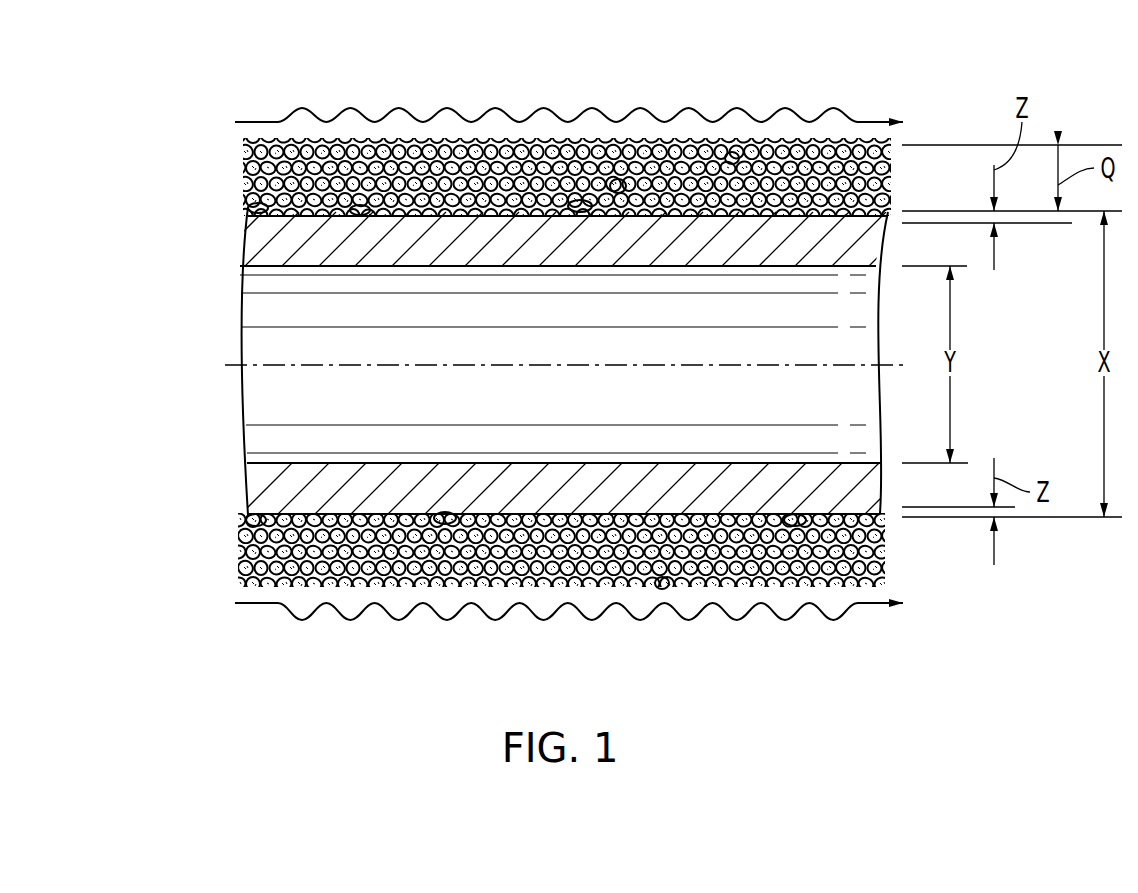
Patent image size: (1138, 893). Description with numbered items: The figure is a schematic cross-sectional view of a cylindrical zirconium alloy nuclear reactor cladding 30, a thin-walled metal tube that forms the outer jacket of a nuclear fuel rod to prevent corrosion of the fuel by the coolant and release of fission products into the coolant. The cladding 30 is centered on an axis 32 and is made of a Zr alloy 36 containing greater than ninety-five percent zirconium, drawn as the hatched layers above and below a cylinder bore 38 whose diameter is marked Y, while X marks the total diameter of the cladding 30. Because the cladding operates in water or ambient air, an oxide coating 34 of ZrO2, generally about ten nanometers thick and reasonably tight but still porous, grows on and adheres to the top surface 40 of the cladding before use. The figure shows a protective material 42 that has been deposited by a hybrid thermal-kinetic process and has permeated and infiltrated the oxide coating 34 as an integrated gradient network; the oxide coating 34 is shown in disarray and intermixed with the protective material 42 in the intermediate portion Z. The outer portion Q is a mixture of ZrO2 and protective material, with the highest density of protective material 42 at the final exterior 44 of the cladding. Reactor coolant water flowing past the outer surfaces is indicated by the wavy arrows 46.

The cylindrical zirconium alloy nuclear reactor cladding 30 is at (140, 134).
The axis 32 is at (243, 362).
The oxide coating 34 is at (360, 205).
The Zr alloy 36 is at (244, 246).
The cylinder bore 38 is at (252, 308).
The top surface 40 is at (620, 180).
The protective material 42 is at (522, 190).
The final exterior 44 is at (732, 152).
The arrow 46 is at (595, 109).